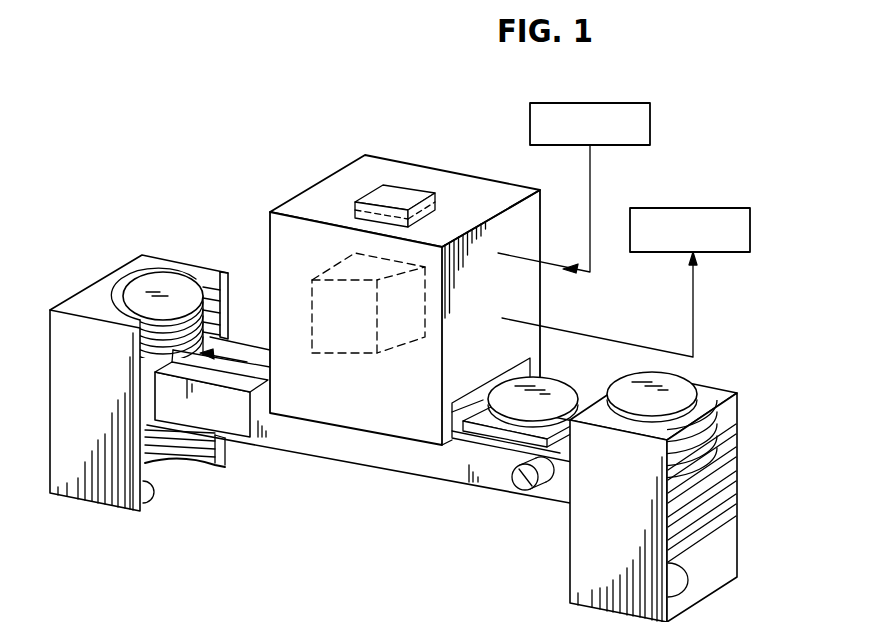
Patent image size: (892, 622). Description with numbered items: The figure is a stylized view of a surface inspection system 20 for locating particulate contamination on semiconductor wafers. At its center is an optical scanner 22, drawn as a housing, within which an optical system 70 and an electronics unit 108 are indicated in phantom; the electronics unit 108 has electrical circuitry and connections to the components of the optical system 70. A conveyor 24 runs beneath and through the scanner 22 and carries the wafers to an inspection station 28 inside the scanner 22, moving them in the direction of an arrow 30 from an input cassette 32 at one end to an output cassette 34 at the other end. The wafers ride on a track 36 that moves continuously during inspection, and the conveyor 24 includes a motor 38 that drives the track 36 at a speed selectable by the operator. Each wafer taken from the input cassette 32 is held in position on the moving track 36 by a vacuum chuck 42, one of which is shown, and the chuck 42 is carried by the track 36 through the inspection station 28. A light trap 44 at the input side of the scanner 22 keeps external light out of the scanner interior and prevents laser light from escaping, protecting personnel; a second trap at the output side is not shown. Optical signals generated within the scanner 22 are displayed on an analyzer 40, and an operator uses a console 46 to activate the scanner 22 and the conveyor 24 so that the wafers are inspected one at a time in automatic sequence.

The surface inspection system 20 is at (460, 163).
The optical scanner 22 is at (318, 188).
The conveyor 24 is at (437, 470).
The inspection station 28 is at (383, 403).
The arrow 30 is at (232, 360).
The input cassette 32 is at (722, 383).
The output cassette 34 is at (93, 290).
The track 36 is at (258, 383).
The motor 38 is at (515, 490).
The analyzer 40 is at (750, 230).
The vacuum chuck 42 is at (500, 430).
The light trap 44 is at (488, 387).
The console 46 is at (640, 127).
The optical system 70 is at (350, 352).
The electronics unit 108 is at (397, 192).